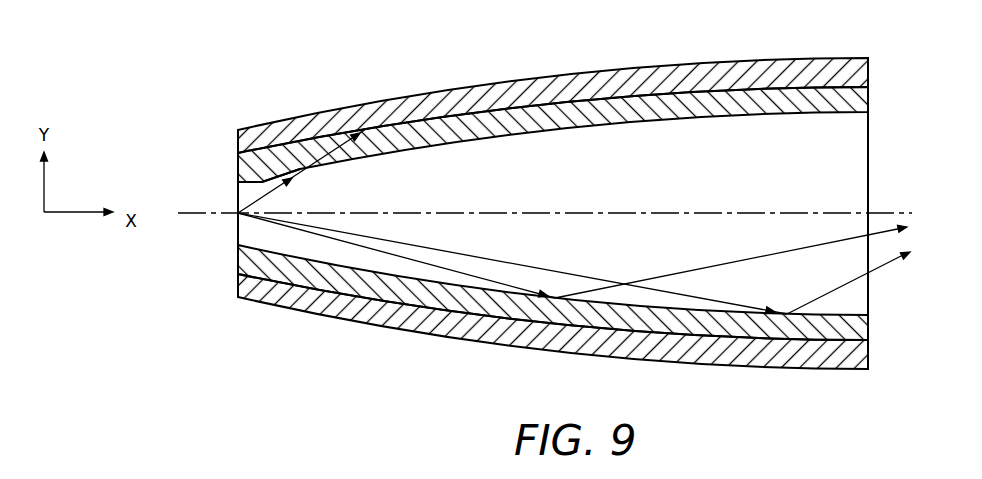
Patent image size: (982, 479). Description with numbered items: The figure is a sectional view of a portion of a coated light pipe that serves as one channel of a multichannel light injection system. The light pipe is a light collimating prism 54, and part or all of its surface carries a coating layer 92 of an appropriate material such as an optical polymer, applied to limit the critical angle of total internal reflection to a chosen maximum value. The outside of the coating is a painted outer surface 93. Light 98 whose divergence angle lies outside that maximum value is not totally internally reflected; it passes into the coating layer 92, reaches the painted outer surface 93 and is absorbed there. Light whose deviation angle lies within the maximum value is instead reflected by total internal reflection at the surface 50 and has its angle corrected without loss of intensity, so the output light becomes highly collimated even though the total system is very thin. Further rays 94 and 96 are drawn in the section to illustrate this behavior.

The surface 50 is at (563, 313).
The light collimating prism 54 is at (414, 348).
The coating layer 92 is at (580, 113).
The painted outer surface 93 is at (790, 72).
The light ray 94 is at (523, 265).
The light ray 96 is at (355, 255).
The light 98 is at (263, 186).